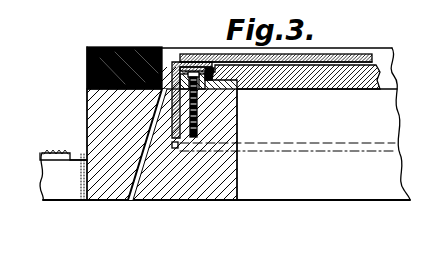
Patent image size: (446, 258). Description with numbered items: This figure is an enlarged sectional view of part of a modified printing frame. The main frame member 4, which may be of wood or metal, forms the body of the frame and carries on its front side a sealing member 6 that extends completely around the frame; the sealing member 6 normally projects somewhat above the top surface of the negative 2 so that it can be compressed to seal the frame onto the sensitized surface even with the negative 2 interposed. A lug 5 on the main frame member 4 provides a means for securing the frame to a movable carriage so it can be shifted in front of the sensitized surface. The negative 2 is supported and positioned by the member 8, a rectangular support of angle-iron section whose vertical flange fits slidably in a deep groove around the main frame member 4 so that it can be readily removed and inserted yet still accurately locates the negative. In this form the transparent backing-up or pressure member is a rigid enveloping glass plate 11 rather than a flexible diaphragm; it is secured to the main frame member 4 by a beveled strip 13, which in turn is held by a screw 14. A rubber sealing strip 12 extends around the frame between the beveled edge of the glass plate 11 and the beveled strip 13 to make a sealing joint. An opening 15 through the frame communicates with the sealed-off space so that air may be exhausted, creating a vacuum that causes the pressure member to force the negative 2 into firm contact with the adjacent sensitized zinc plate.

The negative 2 is at (355, 62).
The main frame member 4 is at (98, 128).
The lug 5 is at (65, 188).
The sealing member 6 is at (87, 63).
The negative supporting member 8 is at (172, 65).
The enveloping glass plate 11 is at (355, 78).
The rubber sealing strip 12 is at (213, 76).
The beveled strip 13 is at (213, 64).
The screw 14 is at (200, 104).
The opening 15 is at (138, 188).